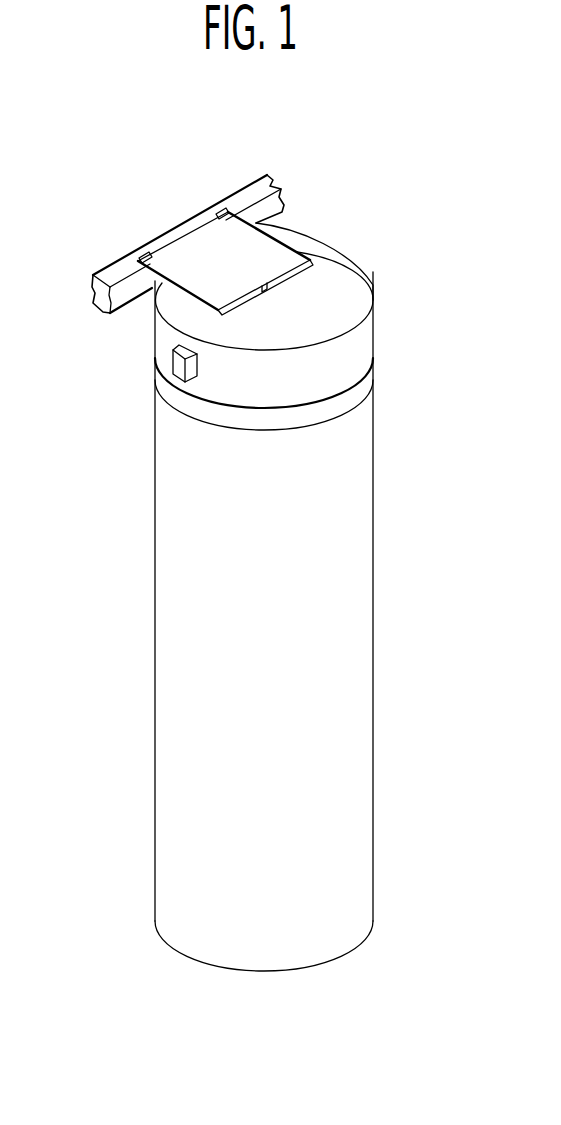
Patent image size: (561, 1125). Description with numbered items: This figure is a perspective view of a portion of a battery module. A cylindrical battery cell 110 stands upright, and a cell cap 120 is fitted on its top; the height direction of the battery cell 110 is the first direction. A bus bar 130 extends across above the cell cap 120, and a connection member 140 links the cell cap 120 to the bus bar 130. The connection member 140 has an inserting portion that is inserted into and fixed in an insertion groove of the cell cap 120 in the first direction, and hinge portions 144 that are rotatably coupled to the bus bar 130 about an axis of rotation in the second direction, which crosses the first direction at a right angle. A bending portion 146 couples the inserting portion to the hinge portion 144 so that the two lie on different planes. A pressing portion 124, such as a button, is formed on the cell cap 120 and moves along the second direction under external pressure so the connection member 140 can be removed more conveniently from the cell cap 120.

The battery cell 110 is at (147, 520).
The cell cap 120 is at (146, 324).
The pressing portion 124 is at (172, 366).
The bus bar 130 is at (110, 267).
The connection member 140 is at (305, 245).
The hinge portion 144 is at (215, 208).
The bending portion 146 is at (371, 269).